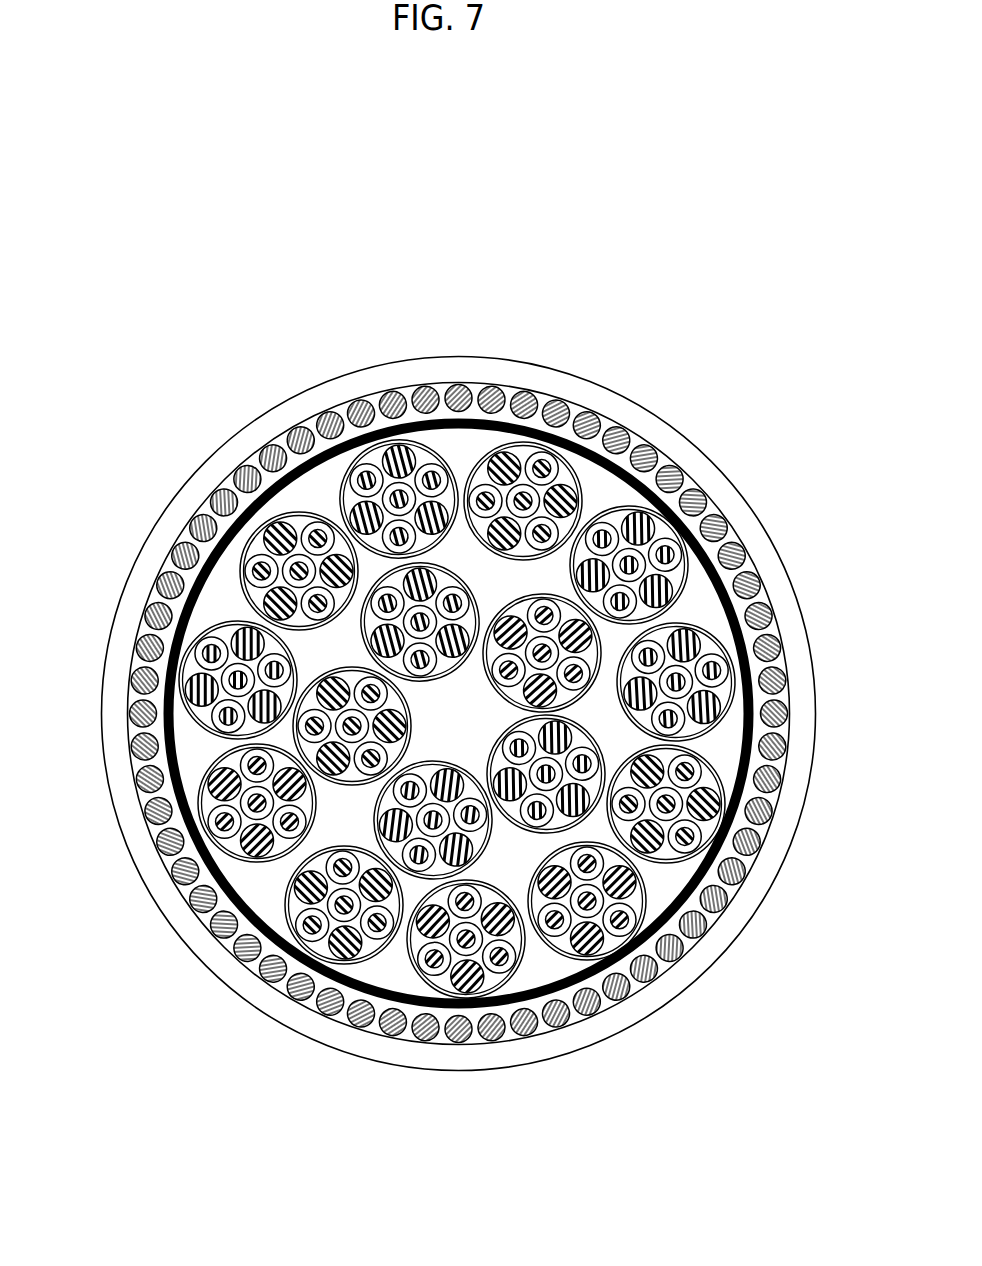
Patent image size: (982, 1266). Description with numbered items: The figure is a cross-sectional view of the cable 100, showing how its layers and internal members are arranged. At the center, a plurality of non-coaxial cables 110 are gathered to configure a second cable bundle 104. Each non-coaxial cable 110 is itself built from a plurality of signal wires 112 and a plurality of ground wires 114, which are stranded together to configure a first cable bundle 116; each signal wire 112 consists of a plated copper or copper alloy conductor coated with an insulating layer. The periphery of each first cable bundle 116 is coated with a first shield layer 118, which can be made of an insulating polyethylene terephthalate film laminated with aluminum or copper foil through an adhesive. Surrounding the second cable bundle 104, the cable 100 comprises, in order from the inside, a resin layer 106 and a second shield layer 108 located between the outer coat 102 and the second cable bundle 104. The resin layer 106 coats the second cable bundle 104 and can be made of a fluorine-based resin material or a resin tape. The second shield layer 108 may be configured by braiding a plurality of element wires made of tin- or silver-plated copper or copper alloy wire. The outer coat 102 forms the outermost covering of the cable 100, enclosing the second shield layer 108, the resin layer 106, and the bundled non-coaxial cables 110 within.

The cable 100 is at (555, 245).
The outer coat 102 is at (410, 368).
The second cable bundle 104 is at (606, 492).
The resin layer 106 is at (572, 440).
The second shield layer 108 is at (327, 417).
The non-coaxial cable 110 is at (200, 732).
The signal wire 112 is at (307, 938).
The ground wire 114 is at (338, 965).
The first cable bundle 116 is at (258, 1083).
The first shield layer 118 is at (367, 963).